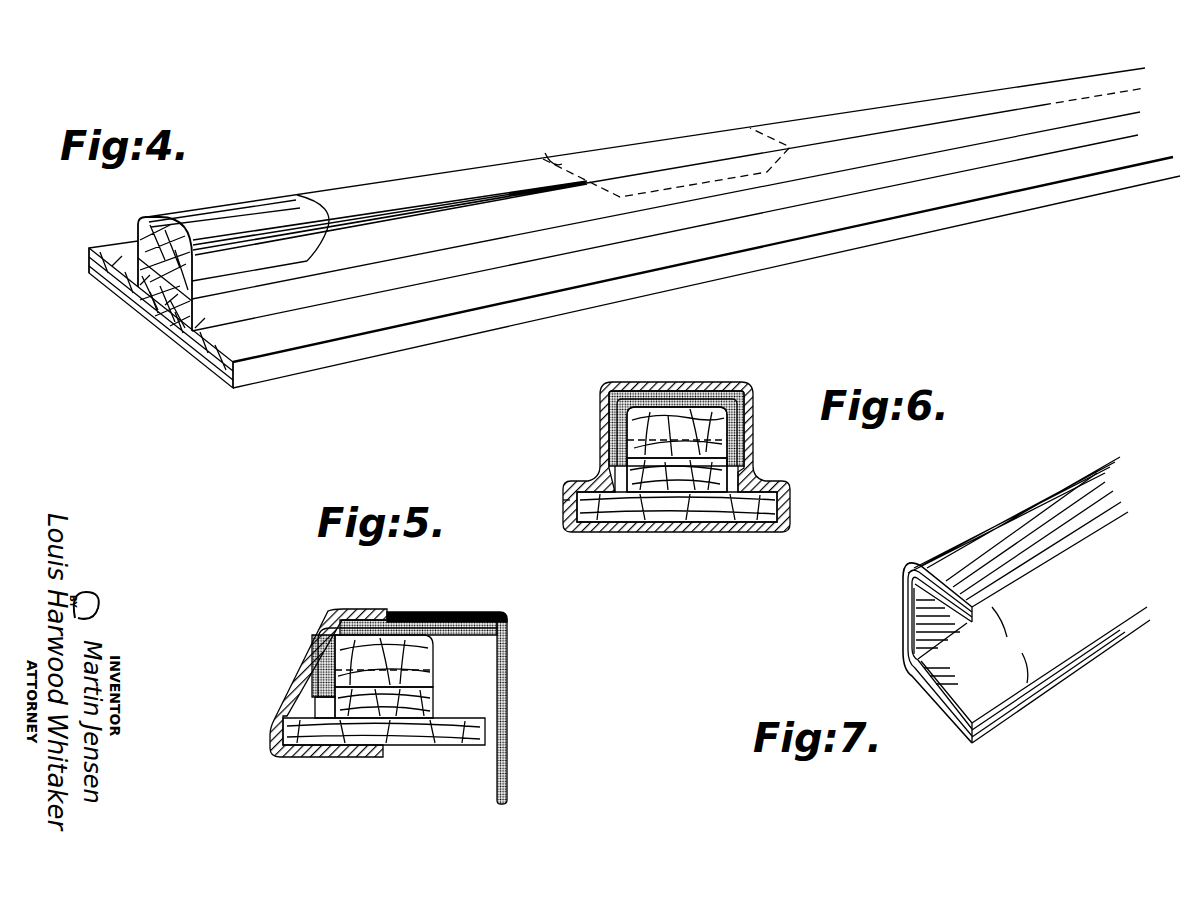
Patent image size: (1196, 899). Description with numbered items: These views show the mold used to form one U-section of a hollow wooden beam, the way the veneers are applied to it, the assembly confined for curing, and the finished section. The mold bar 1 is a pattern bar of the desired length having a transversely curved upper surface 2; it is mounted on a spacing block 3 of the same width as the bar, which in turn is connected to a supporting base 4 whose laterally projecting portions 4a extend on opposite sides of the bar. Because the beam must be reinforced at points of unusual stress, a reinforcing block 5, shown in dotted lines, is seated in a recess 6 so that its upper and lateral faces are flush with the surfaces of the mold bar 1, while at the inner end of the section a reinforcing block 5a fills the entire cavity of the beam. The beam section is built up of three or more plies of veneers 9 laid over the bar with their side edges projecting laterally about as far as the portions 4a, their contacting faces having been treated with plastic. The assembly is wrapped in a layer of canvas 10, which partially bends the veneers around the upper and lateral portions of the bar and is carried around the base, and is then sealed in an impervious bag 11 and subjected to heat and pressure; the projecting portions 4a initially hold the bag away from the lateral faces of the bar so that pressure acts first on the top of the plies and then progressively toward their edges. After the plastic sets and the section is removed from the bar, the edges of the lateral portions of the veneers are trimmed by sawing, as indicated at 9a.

In FIG. 4, the mold bar 1 is at (503, 232).
In FIG. 6, the mold bar 1 is at (753, 431).
In FIG. 5, the mold bar 1 is at (435, 658).
In FIG. 4, the transversely curved upper surface 2 is at (423, 180).
In FIG. 6, the transversely curved upper surface 2 is at (653, 403).
In FIG. 5, the transversely curved upper surface 2 is at (417, 617).
In FIG. 4, the spacing block 3 is at (195, 312).
In FIG. 6, the spacing block 3 is at (740, 478).
In FIG. 5, the spacing block 3 is at (430, 700).
In FIG. 4, the supporting base 4 is at (290, 363).
In FIG. 6, the supporting base 4 is at (682, 508).
In FIG. 5, the supporting base 4 is at (433, 740).
In FIG. 4, the laterally projecting portions 4a is at (120, 262).
In FIG. 4, the reinforcing block 5 is at (647, 148).
In FIG. 4, the reinforcing block 5a is at (240, 210).
In FIG. 4, the recess 6 is at (552, 160).
In FIG. 6, the veneers 9 is at (713, 386).
In FIG. 5, the veneers 9 is at (480, 636).
In FIG. 7, the veneers 9 is at (903, 621).
In FIG. 7, the trimmed edges 9a is at (1013, 645).
In FIG. 6, the canvas layer 10 is at (565, 507).
In FIG. 5, the canvas layer 10 is at (507, 680).
In FIG. 6, the impervious bag 11 is at (600, 437).
In FIG. 5, the impervious bag 11 is at (283, 690).